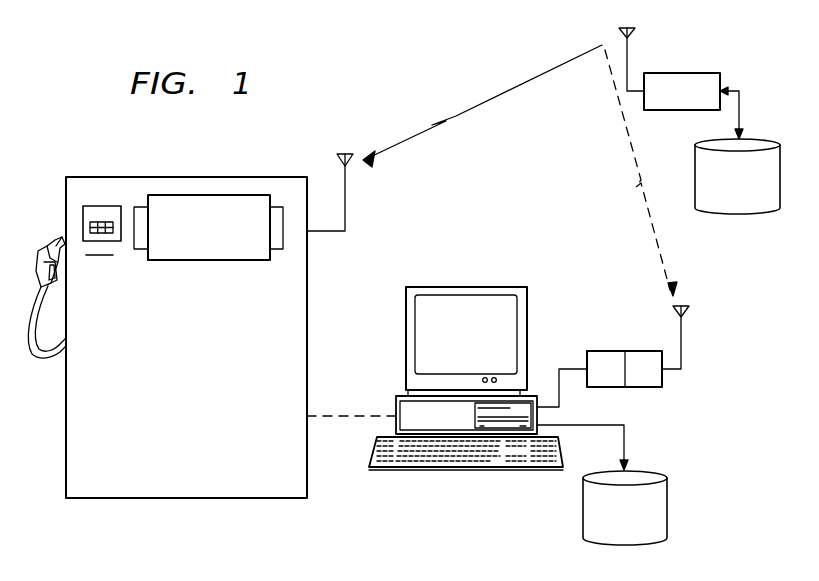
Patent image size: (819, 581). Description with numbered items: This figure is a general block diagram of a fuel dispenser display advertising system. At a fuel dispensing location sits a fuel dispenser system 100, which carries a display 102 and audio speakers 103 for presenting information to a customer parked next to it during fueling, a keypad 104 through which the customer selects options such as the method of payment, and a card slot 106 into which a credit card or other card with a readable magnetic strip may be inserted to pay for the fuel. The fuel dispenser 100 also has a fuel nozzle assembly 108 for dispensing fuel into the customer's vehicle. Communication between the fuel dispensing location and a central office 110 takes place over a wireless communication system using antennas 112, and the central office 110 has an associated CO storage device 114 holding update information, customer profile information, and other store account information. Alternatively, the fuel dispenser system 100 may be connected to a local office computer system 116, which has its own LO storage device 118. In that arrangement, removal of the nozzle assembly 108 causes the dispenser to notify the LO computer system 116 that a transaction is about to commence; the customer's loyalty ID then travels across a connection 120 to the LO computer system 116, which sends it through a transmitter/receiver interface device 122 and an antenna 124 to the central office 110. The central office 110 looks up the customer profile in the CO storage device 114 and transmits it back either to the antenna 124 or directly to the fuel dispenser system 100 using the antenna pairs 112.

The fuel dispenser system 100 is at (185, 498).
The display 102 is at (212, 260).
The audio speakers 103 is at (141, 249).
The keypad 104 is at (83, 212).
The card slot 106 is at (100, 258).
The fuel nozzle assembly 108 is at (38, 352).
The central office (CO) 110 is at (682, 73).
The antennas 112 is at (344, 153).
The CO storage device 114 is at (737, 214).
The local office (LO) computer system 116 is at (466, 287).
The LO storage device 118 is at (668, 510).
The connection 120 is at (354, 412).
The transmitter/receiver interface device 122 is at (625, 350).
The antenna 124 is at (690, 312).